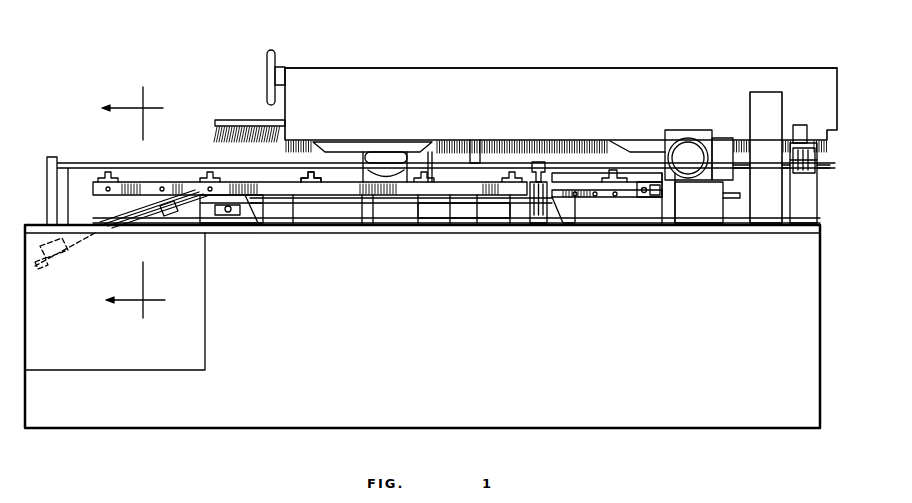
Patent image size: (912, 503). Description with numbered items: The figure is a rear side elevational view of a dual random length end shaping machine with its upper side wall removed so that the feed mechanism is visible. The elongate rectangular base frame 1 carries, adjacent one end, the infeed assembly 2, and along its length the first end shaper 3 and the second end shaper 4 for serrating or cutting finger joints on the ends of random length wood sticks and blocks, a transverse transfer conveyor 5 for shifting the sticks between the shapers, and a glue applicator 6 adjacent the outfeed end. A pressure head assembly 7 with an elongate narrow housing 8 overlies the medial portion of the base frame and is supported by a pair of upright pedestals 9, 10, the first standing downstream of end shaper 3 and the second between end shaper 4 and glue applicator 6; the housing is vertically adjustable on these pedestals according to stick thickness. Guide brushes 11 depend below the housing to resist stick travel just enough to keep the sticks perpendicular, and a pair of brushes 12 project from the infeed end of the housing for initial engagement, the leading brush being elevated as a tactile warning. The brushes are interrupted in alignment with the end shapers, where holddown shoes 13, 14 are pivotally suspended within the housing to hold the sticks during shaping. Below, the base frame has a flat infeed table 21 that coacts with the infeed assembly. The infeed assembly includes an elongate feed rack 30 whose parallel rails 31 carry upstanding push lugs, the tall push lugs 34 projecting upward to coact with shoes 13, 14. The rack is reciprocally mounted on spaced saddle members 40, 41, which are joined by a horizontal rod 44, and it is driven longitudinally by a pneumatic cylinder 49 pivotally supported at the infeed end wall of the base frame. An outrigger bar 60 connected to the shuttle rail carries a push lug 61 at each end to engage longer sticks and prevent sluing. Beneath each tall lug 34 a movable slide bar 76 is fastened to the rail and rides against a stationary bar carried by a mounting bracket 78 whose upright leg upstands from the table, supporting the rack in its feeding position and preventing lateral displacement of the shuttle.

The base frame 1 is at (730, 428).
The infeed assembly 2 is at (189, 141).
The first end shaper 3 is at (390, 155).
The second end shaper 4 is at (686, 132).
The transverse transfer conveyor 5 is at (536, 223).
The glue applicator 6 is at (810, 198).
The pressure head assembly 7 is at (437, 68).
The pressure head housing 8 is at (512, 80).
The first pedestal 9 is at (472, 150).
The second pedestal 10 is at (770, 92).
The guide brushes 11 is at (560, 141).
The projecting brushes 12 is at (229, 120).
The upstream holddown shoe 13 is at (351, 140).
The downstream holddown shoe 14 is at (634, 145).
The infeed table 21 is at (80, 163).
The feed rack 30 is at (330, 205).
The rack rails 31 is at (395, 208).
The tall push lug 34 is at (310, 182).
The first saddle member 40 is at (245, 222).
The second saddle member 41 is at (558, 223).
The horizontal rod 44 is at (440, 223).
The pneumatic cylinder 49 is at (160, 226).
The outrigger bar 60 is at (116, 193).
The outrigger push lug 61 is at (108, 173).
The movable slide bar 76 is at (586, 198).
The mounting bracket 78 is at (362, 208).